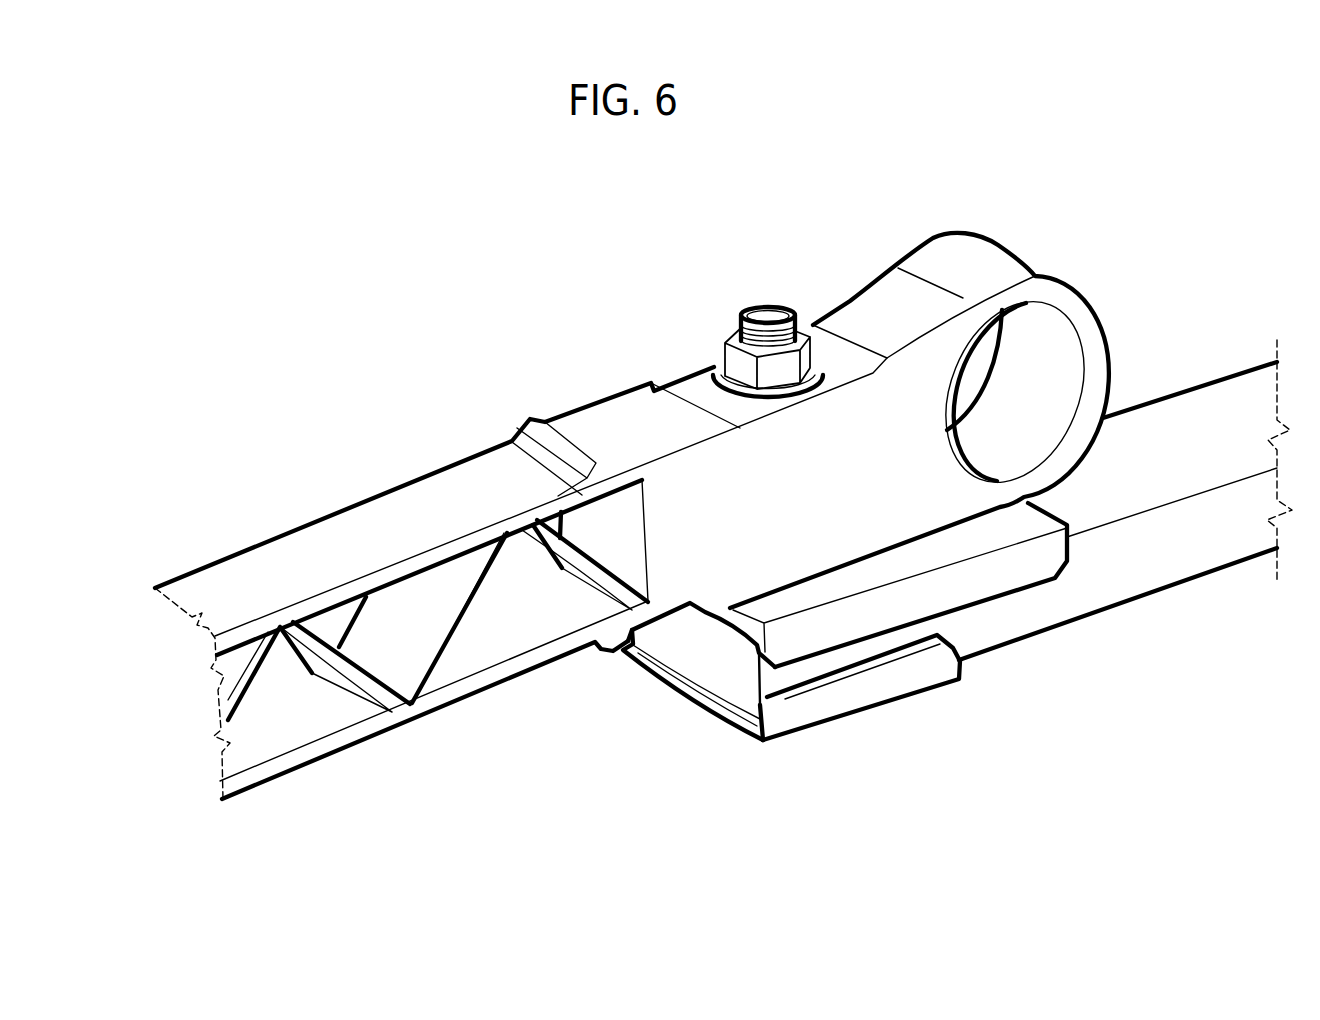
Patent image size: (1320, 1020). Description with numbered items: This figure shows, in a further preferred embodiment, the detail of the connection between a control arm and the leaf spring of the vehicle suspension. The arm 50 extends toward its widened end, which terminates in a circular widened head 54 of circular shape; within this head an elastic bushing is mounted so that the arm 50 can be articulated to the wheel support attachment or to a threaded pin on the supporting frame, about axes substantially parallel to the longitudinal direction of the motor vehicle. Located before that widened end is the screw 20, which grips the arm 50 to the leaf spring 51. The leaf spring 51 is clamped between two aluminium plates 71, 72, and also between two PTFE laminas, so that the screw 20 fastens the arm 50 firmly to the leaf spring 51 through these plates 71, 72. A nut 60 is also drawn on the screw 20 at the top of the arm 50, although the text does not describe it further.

The screw 20 is at (768, 311).
The arm 50 is at (1112, 277).
The leaf spring 51 is at (1200, 611).
The widened head 54 is at (968, 257).
The nut 60 is at (738, 362).
The aluminium plate 71 is at (997, 572).
The aluminium plate 72 is at (830, 698).